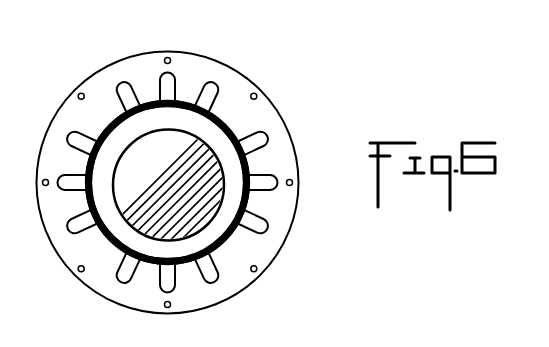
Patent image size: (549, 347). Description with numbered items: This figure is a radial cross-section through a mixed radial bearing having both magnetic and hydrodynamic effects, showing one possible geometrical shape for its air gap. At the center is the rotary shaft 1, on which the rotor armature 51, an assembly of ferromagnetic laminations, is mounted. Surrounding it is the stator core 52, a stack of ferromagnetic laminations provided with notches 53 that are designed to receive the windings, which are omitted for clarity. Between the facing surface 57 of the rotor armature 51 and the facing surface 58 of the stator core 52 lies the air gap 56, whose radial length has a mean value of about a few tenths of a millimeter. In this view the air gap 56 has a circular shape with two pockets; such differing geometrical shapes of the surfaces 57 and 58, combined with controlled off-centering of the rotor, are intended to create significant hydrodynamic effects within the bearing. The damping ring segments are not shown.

The rotary shaft 1 is at (140, 228).
The rotor armature 51 is at (108, 146).
The stator core 52 is at (114, 71).
The notches 53 is at (206, 94).
The air gap 56 is at (258, 132).
The surface of the rotor armature 57 is at (222, 131).
The surface of the stator core 58 is at (215, 112).